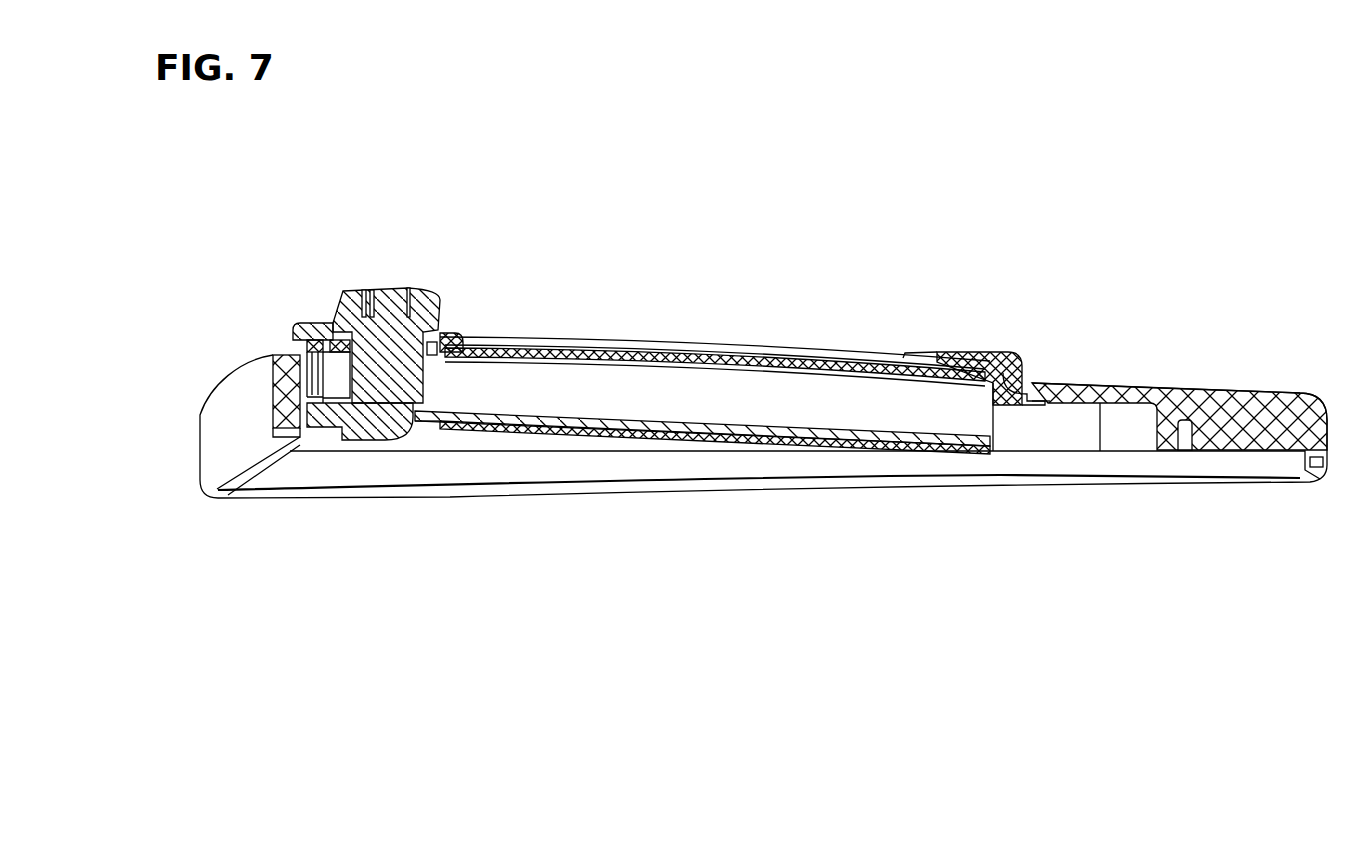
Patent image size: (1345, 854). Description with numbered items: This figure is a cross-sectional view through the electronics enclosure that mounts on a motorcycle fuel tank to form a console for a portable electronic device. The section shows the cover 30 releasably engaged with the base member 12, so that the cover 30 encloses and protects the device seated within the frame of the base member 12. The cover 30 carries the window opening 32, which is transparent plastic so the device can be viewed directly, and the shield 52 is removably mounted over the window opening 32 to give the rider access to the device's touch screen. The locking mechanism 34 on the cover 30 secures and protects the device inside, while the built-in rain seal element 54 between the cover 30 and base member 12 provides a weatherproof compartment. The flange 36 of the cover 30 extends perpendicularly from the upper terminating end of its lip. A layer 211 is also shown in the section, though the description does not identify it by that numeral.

The base member 12 is at (245, 428).
The cover 30 is at (974, 353).
The window opening 32 is at (459, 336).
The locking mechanism 34 is at (424, 283).
The flange 36 is at (1029, 402).
The shield 52 is at (546, 341).
The rain seal element 54 is at (294, 338).
The lower panel 211 is at (806, 426).